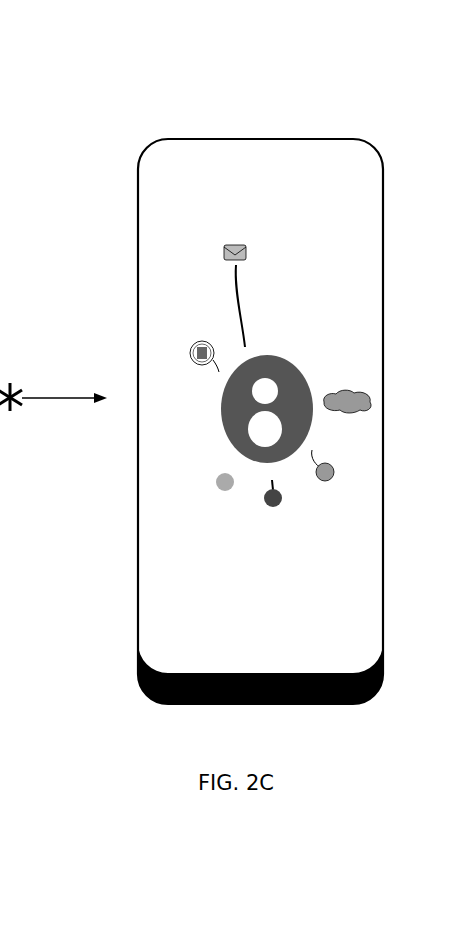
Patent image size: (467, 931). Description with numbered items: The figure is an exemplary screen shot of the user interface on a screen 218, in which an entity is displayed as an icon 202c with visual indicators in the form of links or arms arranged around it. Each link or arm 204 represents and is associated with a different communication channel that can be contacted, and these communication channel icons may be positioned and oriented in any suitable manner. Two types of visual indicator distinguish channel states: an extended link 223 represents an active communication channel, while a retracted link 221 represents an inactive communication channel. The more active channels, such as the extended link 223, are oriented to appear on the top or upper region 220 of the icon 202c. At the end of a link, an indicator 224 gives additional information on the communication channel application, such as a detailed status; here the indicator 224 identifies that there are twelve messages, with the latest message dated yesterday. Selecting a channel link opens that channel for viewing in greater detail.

The screen 218 is at (353, 140).
The upper region 220 is at (343, 315).
The link 223 is at (292, 231).
The indicator 224 is at (213, 242).
The link 204 is at (178, 337).
The icon 202c is at (233, 435).
The link 221 is at (292, 507).